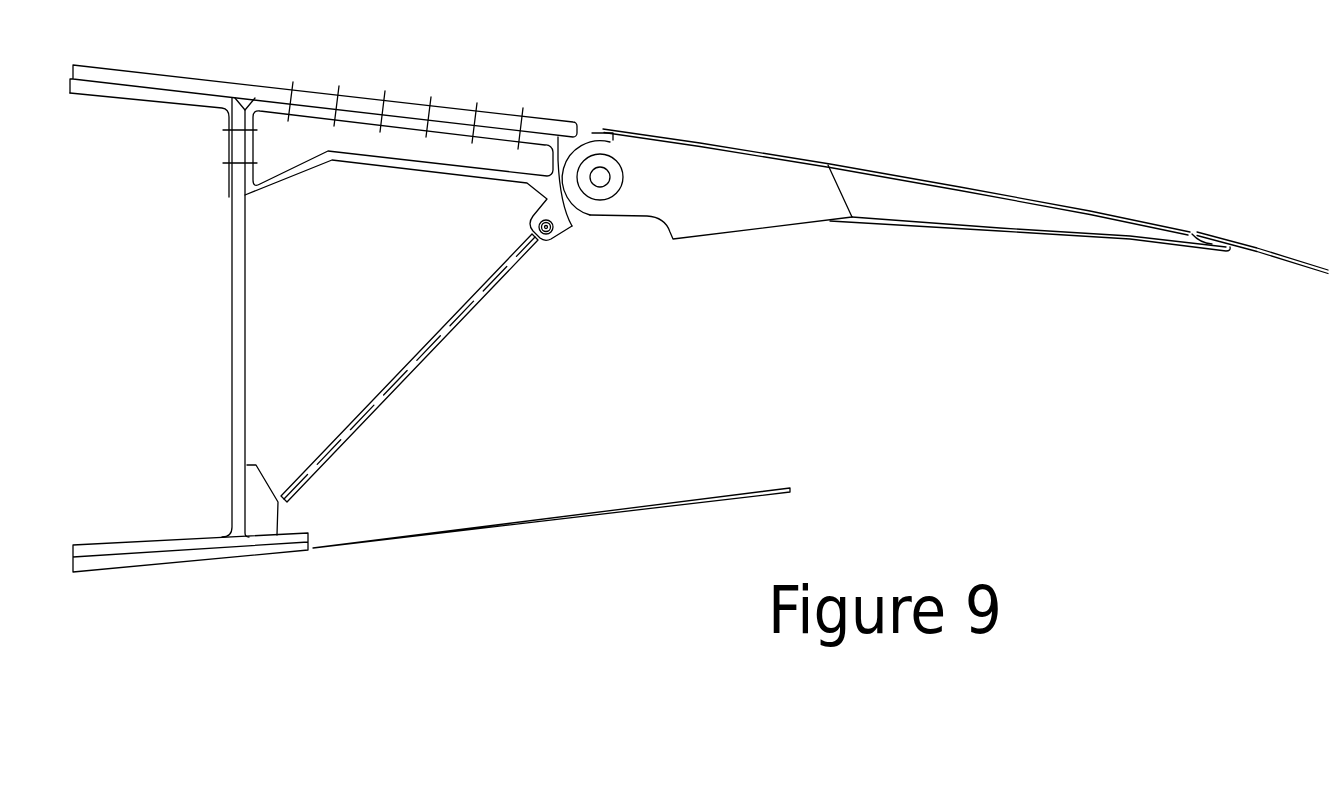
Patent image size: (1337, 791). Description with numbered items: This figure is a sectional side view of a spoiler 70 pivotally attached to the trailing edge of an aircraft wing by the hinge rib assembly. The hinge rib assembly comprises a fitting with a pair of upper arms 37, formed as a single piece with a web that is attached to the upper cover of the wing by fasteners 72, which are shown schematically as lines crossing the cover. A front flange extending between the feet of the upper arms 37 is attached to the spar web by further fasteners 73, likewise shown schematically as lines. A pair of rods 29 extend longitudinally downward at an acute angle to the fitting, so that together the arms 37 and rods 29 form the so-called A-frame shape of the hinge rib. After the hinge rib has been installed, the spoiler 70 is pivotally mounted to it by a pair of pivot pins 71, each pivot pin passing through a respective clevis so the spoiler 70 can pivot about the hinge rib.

The rods 29 is at (442, 333).
The upper arms 37 is at (380, 163).
The spoiler 70 is at (905, 177).
The pivot pins 71 is at (601, 184).
The fasteners 72 is at (337, 108).
The fasteners 73 is at (242, 163).